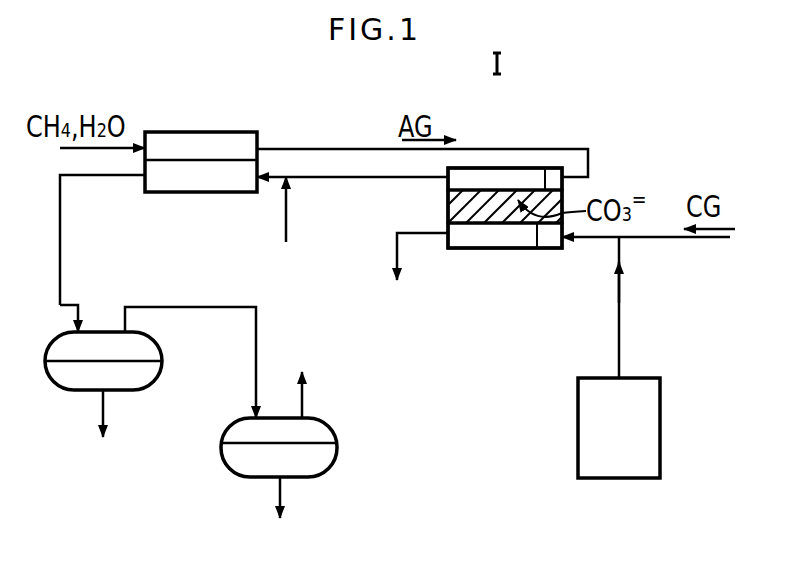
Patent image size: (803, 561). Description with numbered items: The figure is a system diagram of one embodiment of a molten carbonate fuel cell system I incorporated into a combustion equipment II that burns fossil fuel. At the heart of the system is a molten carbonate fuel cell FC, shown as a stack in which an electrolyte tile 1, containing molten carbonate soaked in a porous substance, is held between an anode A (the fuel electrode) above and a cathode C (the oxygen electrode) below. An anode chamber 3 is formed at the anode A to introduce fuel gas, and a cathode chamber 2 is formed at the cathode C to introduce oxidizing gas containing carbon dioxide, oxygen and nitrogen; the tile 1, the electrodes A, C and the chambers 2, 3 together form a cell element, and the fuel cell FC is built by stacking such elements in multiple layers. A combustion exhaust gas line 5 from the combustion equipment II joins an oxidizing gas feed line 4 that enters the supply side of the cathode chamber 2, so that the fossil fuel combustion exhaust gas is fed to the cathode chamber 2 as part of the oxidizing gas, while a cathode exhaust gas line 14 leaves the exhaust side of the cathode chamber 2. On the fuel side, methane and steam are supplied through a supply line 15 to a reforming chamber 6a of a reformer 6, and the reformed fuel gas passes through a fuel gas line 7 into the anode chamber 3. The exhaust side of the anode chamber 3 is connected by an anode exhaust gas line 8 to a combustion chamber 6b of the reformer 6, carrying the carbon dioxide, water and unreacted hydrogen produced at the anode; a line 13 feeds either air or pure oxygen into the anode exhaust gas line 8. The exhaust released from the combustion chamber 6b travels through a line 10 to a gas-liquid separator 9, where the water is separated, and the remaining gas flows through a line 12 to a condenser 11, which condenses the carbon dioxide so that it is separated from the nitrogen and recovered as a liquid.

The electrolyte tile 1 is at (456, 200).
The cathode chamber 2 is at (505, 250).
The anode chamber 3 is at (524, 167).
The oxidizing gas feed line 4 is at (710, 240).
The combustion exhaust gas line 5 is at (621, 327).
The reformer 6 is at (183, 130).
The reforming chamber 6a is at (243, 144).
The combustion chamber 6b is at (212, 184).
The fuel gas line 7 is at (342, 147).
The anode exhaust gas line 8 is at (358, 179).
The gas-liquid separator 9 is at (55, 337).
The line 10 is at (61, 258).
The condenser 11 is at (330, 433).
The line 12 is at (258, 318).
The line 13 is at (287, 226).
The cathode exhaust gas line 14 is at (400, 256).
The supply line 15 is at (76, 150).
The anode A is at (547, 188).
The cathode C is at (541, 250).
The molten carbonate fuel cell FC is at (570, 195).
The molten carbonate fuel cell system I is at (498, 140).
The combustion equipment II is at (666, 440).